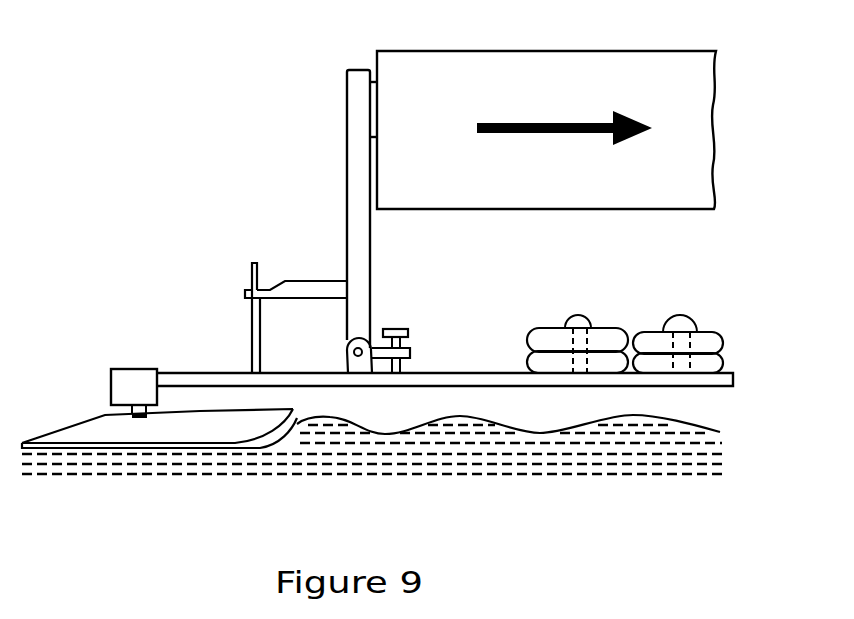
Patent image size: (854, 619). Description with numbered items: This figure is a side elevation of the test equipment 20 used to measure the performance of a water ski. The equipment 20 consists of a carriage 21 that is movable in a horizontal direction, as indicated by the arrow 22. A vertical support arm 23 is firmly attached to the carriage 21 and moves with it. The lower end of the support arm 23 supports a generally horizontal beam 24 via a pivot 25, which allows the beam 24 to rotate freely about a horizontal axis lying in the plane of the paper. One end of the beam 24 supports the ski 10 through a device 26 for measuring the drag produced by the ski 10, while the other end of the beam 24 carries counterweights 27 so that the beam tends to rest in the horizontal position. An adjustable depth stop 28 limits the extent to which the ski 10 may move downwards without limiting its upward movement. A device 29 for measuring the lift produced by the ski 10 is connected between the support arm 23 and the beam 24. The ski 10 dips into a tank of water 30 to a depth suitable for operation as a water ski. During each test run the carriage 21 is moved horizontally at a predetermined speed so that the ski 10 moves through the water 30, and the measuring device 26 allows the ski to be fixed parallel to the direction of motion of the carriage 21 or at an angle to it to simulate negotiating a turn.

The ski 10 is at (245, 439).
The equipment 20 is at (240, 150).
The carriage 21 is at (543, 130).
The arrow 22 is at (497, 136).
The vertical support arm 23 is at (346, 150).
The horizontal beam 24 is at (498, 378).
The pivot 25 is at (348, 363).
The drag measuring device 26 is at (128, 368).
The counterweights 27 is at (612, 328).
The adjustable depth stop 28 is at (398, 328).
The lift measuring device 29 is at (302, 280).
The tank of water 30 is at (424, 426).